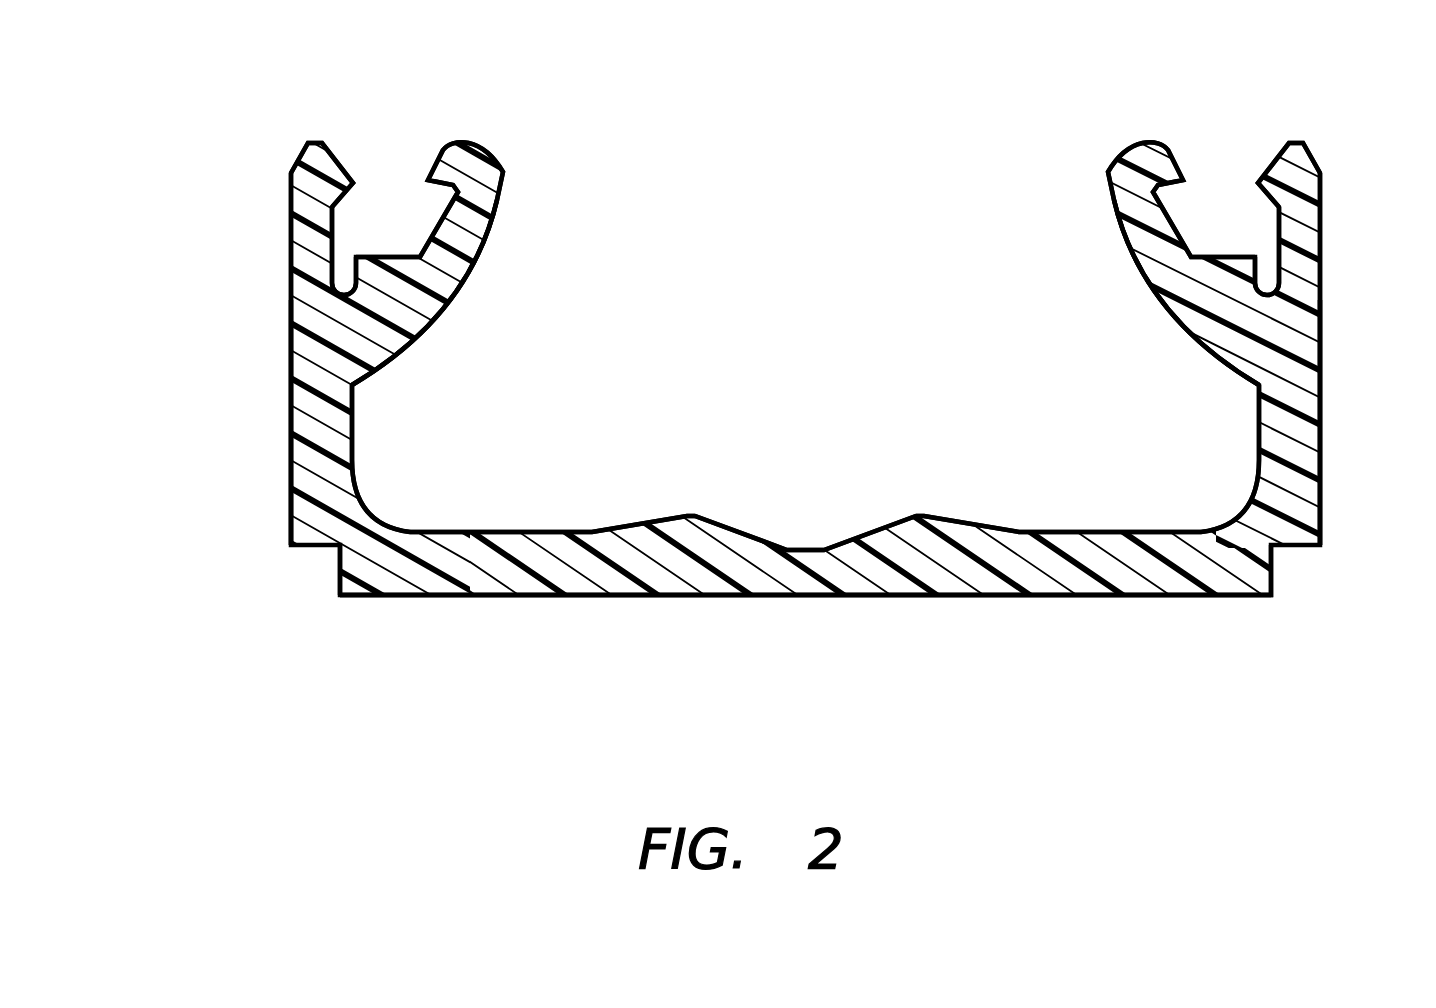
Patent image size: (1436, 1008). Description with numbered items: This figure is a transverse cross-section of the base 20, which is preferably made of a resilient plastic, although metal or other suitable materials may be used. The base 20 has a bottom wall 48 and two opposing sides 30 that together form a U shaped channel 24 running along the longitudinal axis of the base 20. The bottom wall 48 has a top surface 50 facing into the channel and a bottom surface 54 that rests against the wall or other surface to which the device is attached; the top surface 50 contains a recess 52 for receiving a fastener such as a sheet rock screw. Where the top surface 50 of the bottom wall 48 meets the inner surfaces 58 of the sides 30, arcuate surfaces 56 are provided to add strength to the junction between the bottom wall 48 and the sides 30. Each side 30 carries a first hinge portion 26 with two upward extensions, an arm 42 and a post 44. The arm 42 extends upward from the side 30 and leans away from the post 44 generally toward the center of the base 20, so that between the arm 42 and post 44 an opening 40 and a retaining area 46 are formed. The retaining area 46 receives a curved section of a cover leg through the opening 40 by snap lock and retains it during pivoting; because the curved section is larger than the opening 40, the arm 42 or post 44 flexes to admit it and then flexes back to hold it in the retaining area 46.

The base 20 is at (1218, 652).
The U shaped channel 24 is at (800, 80).
The first hinge portion 26 is at (282, 308).
The side 30 is at (320, 412).
The opening 40 is at (432, 128).
The arm 42 is at (482, 222).
The post 44 is at (300, 245).
The retaining area 46 is at (380, 225).
The bottom wall 48 is at (760, 585).
The top surface 50 is at (1003, 530).
The recess 52 is at (805, 548).
The bottom surface 54 is at (1050, 598).
The arcuate surface 56 is at (385, 519).
The inner surface 58 is at (360, 440).